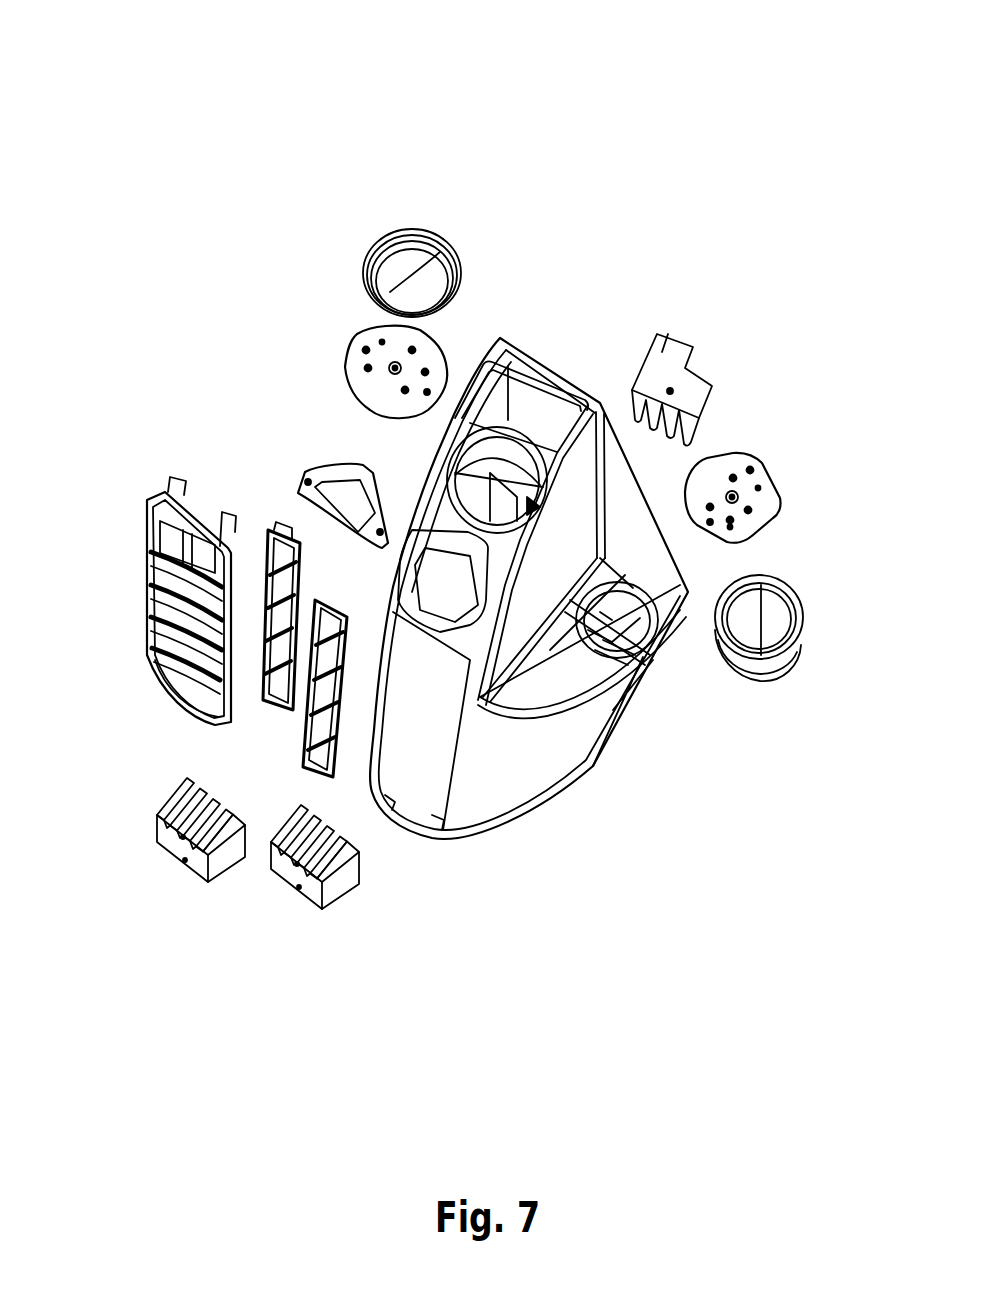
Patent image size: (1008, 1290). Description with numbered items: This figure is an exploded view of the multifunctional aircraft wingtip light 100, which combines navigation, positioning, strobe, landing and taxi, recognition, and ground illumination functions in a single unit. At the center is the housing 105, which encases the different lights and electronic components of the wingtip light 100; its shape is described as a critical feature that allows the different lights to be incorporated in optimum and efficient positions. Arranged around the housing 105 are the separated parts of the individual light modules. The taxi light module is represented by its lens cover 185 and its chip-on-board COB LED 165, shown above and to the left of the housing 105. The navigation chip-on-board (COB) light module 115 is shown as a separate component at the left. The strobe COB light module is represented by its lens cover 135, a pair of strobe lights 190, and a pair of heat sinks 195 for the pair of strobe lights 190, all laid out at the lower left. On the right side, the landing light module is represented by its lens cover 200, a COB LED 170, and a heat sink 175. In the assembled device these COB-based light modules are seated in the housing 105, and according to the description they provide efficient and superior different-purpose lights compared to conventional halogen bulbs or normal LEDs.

The wingtip light 100 is at (578, 126).
The housing 105 is at (566, 796).
The navigation chip-on-board (COB) light module 115 is at (300, 475).
The lens cover 135 is at (145, 570).
The COB LED 165 is at (343, 357).
The COB LED 170 is at (767, 460).
The heat sink 175 is at (668, 358).
The lens cover 185 is at (406, 242).
The pair of strobe lights 190 is at (305, 760).
The heat sinks 195 is at (325, 890).
The lens cover 200 is at (800, 607).